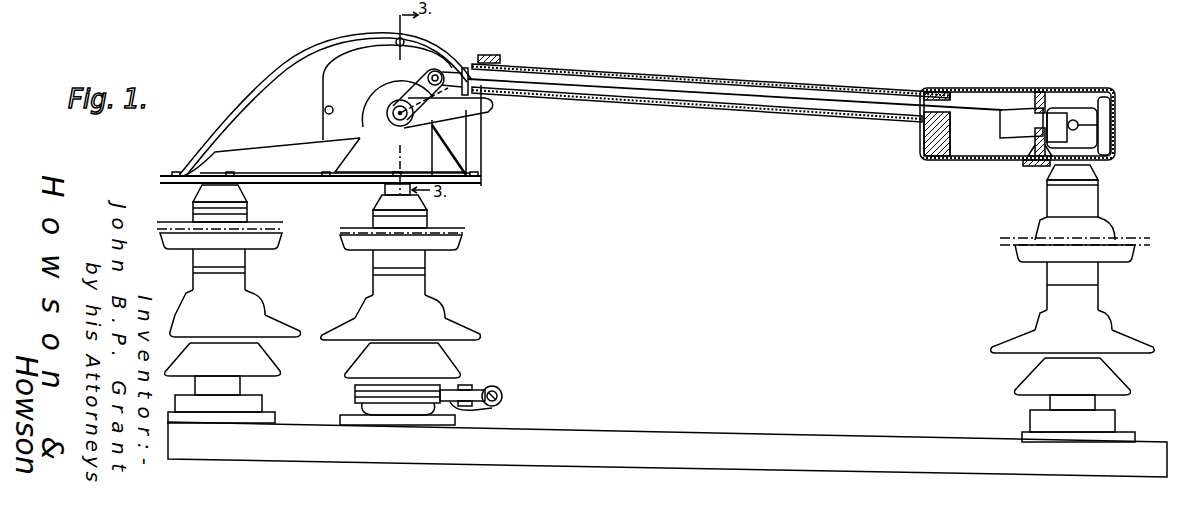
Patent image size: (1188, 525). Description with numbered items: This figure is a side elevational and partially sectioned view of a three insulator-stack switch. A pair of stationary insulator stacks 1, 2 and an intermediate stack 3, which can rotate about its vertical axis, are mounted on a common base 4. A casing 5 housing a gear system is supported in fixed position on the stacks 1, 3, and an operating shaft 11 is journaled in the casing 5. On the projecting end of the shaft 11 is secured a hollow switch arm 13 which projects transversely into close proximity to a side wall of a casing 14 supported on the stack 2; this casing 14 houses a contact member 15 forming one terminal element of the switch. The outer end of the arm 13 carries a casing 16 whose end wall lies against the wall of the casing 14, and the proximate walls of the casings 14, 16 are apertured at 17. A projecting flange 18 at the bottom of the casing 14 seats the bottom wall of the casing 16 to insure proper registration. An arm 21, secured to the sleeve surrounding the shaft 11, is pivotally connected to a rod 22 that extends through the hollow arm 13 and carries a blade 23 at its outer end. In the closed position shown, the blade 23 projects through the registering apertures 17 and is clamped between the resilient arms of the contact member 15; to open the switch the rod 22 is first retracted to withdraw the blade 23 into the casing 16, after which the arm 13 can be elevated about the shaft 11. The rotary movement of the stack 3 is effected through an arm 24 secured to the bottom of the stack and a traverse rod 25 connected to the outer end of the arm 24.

The stationary insulator stack 1 is at (238, 283).
The stationary insulator stack 2 is at (1062, 295).
The intermediate insulator stack 3 is at (428, 290).
The base 4 is at (666, 428).
The casing 5 is at (323, 90).
The operating shaft 11 is at (406, 127).
The hollow switch arm 13 is at (619, 103).
The casing 14 is at (1082, 90).
The contact member 15 is at (1080, 118).
The casing 16 is at (966, 76).
The apertures 17 is at (1042, 94).
The projecting flange 18 is at (1030, 163).
The arm 21 is at (428, 68).
The rod 22 is at (670, 99).
The blade 23 is at (1008, 126).
The arm 24 is at (492, 406).
The traverse rod 25 is at (494, 386).